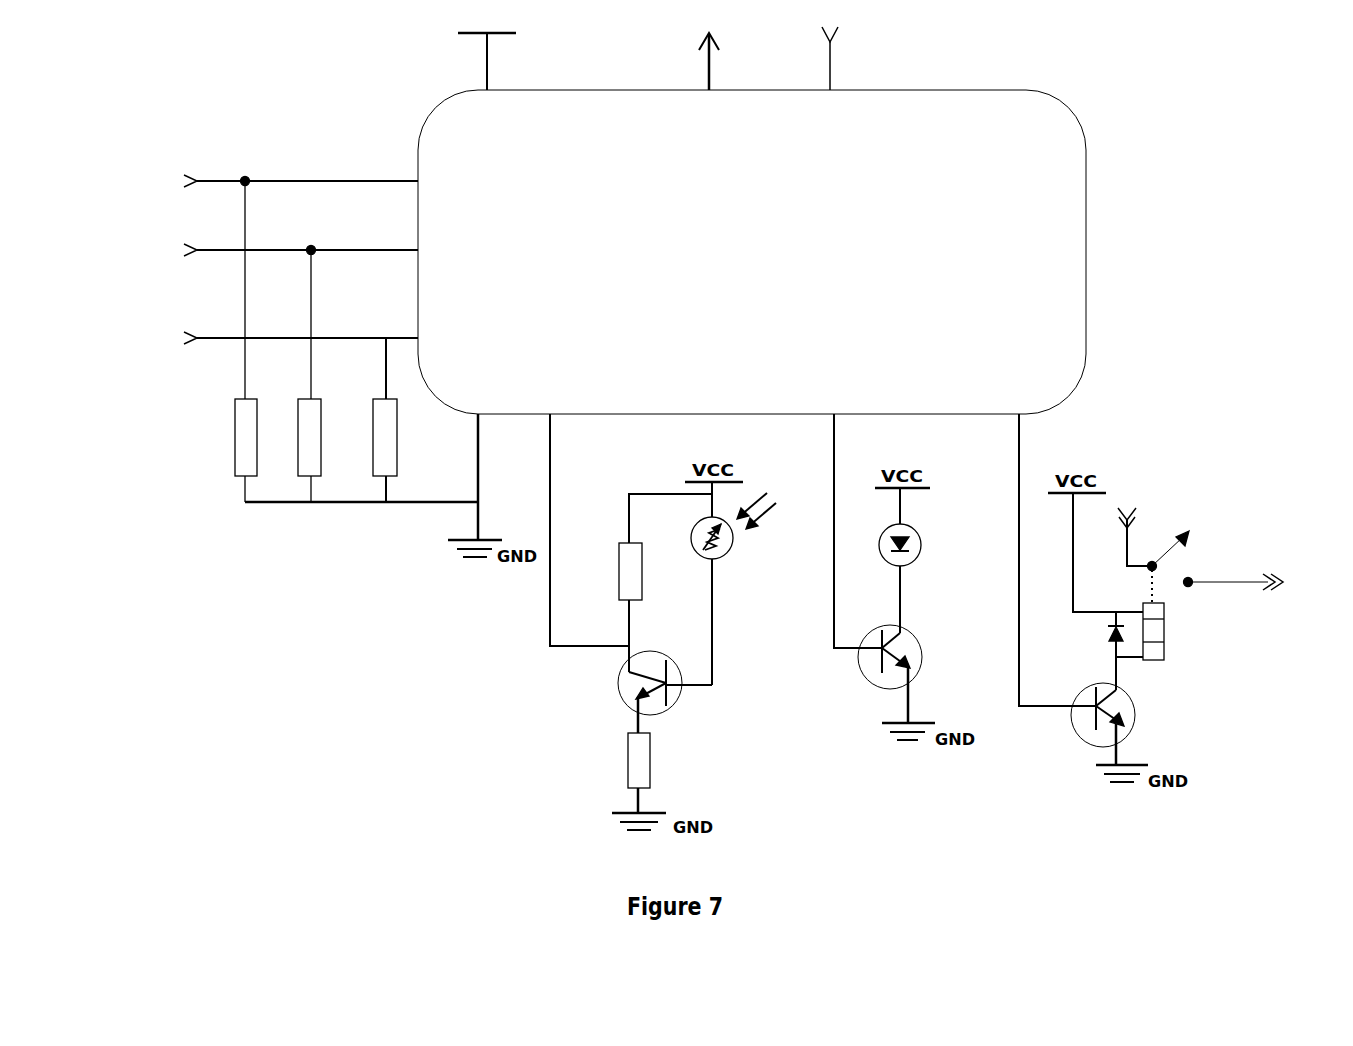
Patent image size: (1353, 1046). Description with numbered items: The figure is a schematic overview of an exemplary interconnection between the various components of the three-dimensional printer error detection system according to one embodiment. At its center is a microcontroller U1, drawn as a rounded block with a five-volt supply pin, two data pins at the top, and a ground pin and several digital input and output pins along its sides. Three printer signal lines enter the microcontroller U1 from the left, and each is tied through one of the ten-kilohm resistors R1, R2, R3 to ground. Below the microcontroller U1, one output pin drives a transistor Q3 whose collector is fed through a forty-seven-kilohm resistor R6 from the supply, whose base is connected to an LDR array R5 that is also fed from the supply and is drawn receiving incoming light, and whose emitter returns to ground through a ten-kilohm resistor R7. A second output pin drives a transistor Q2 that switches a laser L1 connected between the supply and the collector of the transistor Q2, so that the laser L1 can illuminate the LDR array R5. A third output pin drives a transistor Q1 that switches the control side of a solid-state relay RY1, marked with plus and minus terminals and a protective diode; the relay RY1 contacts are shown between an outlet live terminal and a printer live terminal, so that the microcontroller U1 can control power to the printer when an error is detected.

The microcontroller U1 is at (573, 209).
The 10K resistor R1 is at (363, 420).
The 10K resistor R2 is at (290, 374).
The 10K resistor R3 is at (223, 340).
The LDR array R5 is at (754, 589).
The 47K resistor R6 is at (609, 604).
The 10K resistor R7 is at (616, 755).
The transistor Q1 is at (1101, 711).
The transistor Q2 is at (885, 669).
The transistor Q3 is at (665, 683).
The laser L1 is at (919, 560).
The solid state relay RY1 is at (1220, 583).